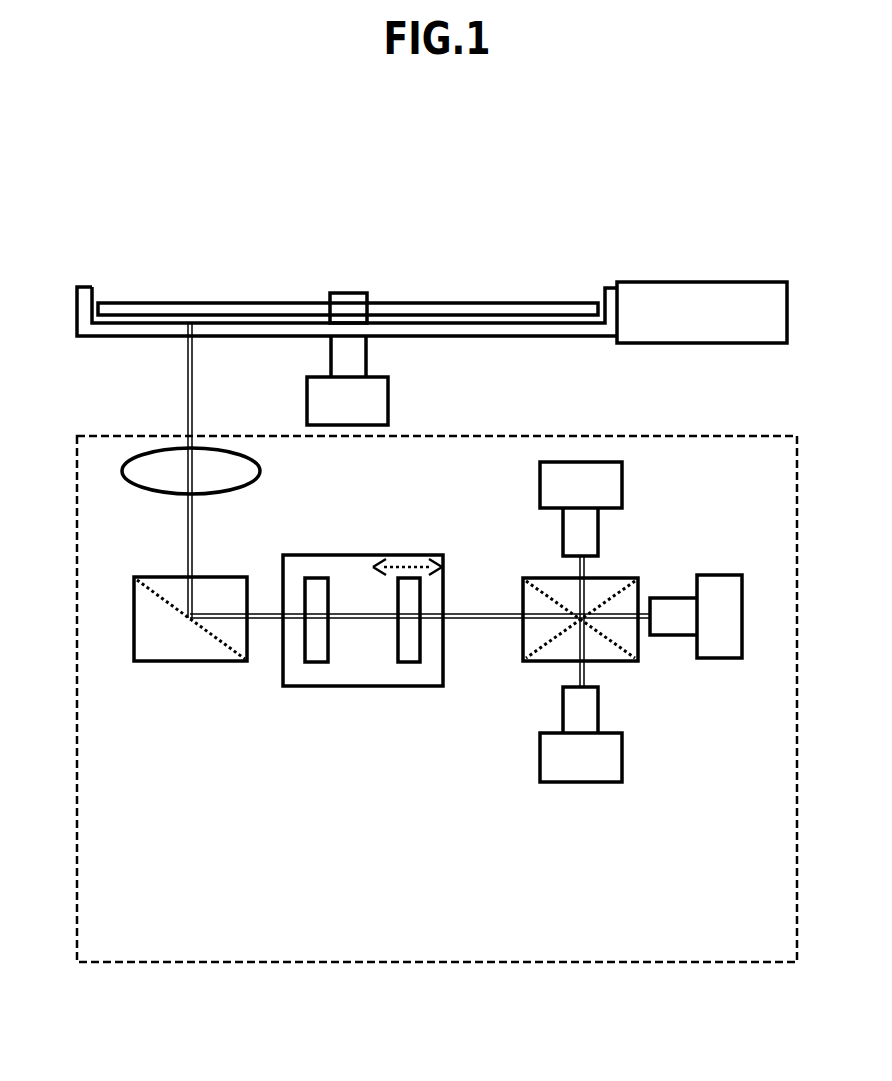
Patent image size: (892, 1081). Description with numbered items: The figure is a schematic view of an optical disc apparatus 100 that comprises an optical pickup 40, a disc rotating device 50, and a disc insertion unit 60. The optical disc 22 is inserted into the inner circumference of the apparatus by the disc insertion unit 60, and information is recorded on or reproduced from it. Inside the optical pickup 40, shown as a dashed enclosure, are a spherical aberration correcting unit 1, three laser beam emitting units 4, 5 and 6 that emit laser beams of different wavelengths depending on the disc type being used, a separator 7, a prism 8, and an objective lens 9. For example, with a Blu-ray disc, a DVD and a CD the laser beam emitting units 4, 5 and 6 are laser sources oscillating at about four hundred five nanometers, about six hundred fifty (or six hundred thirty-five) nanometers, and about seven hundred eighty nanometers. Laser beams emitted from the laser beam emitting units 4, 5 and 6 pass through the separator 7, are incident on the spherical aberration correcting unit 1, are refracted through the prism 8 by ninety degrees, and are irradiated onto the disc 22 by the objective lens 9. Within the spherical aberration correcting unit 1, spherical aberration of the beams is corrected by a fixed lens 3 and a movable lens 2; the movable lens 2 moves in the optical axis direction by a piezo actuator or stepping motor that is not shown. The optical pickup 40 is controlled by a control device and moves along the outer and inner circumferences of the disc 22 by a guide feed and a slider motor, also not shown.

The optical disc apparatus 100 is at (214, 257).
The disc 22 is at (508, 303).
The disc insertion unit 60 is at (637, 282).
The disc rotating device 50 is at (388, 395).
The optical pickup 40 is at (287, 962).
The objective lens 9 is at (138, 490).
The prism 8 is at (153, 650).
The spherical aberration correcting unit 1 is at (347, 553).
The fixed lens 3 is at (315, 660).
The movable lens 2 is at (408, 660).
The laser beam emitting unit 4 is at (622, 480).
The separator 7 is at (613, 652).
The laser beam emitting unit 5 is at (707, 660).
The laser beam emitting unit 6 is at (557, 783).